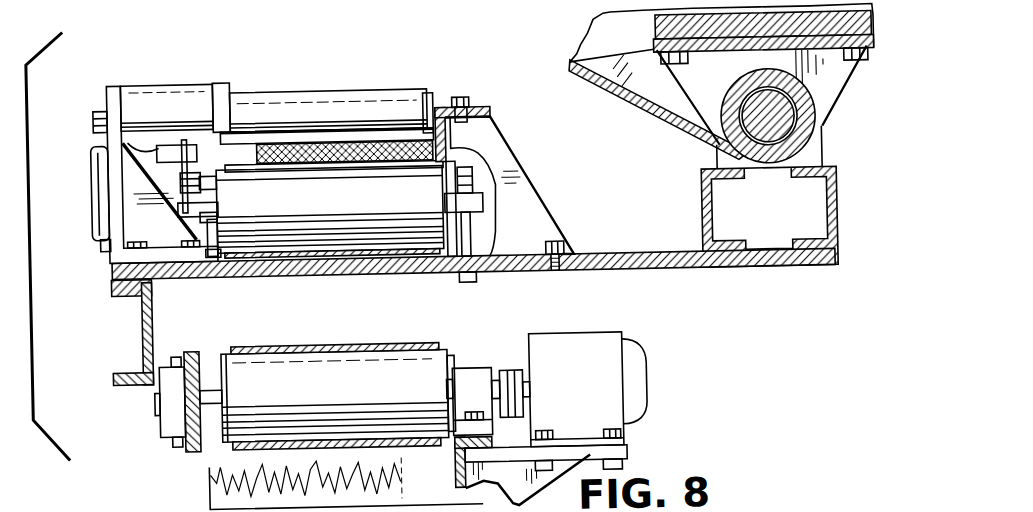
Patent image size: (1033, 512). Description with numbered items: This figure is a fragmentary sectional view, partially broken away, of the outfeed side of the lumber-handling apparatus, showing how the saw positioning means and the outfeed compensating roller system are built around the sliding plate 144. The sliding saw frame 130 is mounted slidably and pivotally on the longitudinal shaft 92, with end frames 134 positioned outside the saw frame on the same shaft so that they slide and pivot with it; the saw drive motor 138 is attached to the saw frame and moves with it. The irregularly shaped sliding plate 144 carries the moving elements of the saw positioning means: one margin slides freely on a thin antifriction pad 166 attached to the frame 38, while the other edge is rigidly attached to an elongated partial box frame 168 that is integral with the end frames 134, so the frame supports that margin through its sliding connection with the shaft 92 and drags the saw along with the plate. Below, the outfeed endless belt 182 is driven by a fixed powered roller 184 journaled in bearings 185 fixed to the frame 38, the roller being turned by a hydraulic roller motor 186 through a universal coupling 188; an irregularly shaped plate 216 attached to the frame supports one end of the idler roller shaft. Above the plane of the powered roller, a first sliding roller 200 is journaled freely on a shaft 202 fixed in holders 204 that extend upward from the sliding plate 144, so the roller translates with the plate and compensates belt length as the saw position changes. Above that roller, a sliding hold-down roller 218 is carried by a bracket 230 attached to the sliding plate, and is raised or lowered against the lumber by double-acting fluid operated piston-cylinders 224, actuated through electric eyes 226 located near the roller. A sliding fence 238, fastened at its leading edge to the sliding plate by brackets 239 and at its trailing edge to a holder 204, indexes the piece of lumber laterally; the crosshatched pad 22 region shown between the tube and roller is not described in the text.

The pad 22 is at (370, 140).
The frame 38 is at (151, 326).
The longitudinal shaft 92 is at (783, 122).
The sliding saw frame 130 is at (607, 80).
The end frames 134 is at (726, 165).
The saw drive motor 138 is at (866, 28).
The sliding plate 144 is at (633, 264).
The antifriction pad 166 is at (110, 276).
The partial box frame 168 is at (703, 210).
The endless belt 182 is at (295, 345).
The fixed powered roller 184 is at (441, 357).
The bearings 185 is at (165, 415).
The hydraulic roller motor 186 is at (644, 414).
The universal coupling 188 is at (518, 369).
The first sliding roller 200 is at (353, 211).
The shaft 202 is at (485, 204).
The holders 204 is at (191, 222).
The irregularly shaped plate 216 is at (195, 345).
The sliding hold-down roller 218 is at (303, 99).
The double-acting fluid operated piston-cylinders 224 is at (96, 182).
The electric eyes 226 is at (175, 139).
The bracket 230 is at (111, 83).
The sliding fence 238 is at (442, 107).
The brackets 239 is at (503, 152).